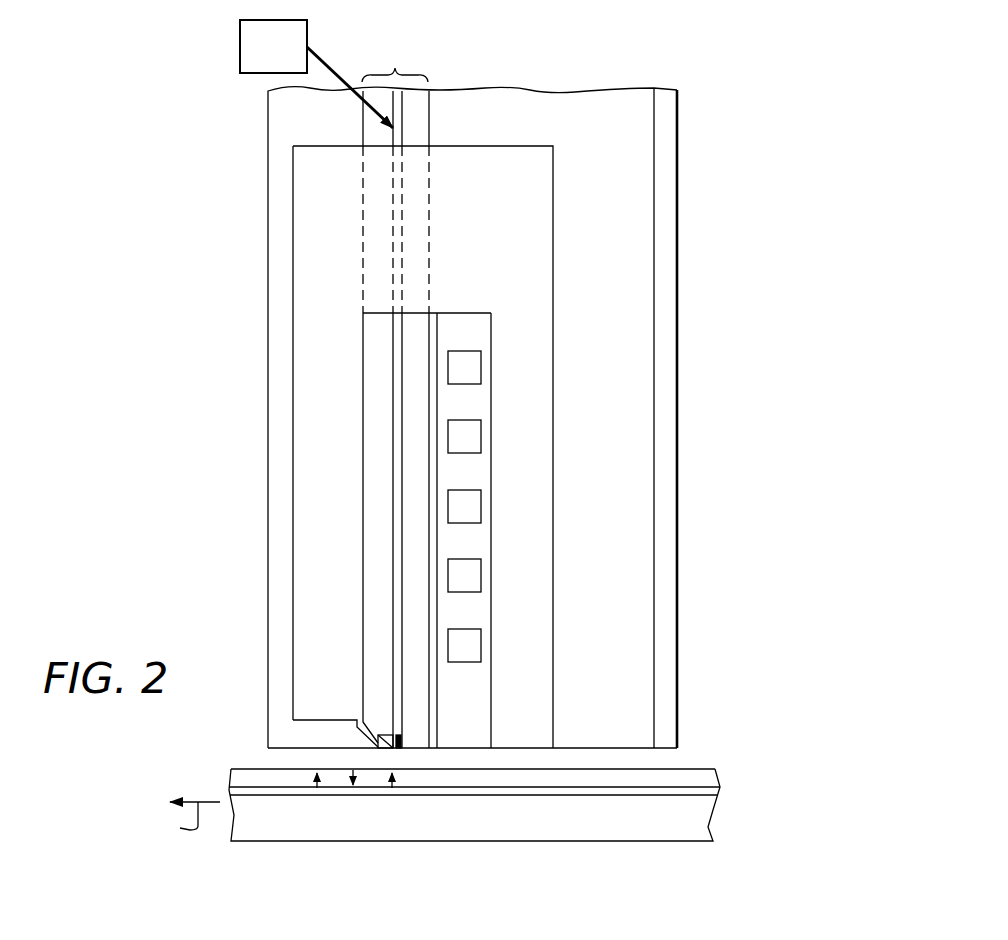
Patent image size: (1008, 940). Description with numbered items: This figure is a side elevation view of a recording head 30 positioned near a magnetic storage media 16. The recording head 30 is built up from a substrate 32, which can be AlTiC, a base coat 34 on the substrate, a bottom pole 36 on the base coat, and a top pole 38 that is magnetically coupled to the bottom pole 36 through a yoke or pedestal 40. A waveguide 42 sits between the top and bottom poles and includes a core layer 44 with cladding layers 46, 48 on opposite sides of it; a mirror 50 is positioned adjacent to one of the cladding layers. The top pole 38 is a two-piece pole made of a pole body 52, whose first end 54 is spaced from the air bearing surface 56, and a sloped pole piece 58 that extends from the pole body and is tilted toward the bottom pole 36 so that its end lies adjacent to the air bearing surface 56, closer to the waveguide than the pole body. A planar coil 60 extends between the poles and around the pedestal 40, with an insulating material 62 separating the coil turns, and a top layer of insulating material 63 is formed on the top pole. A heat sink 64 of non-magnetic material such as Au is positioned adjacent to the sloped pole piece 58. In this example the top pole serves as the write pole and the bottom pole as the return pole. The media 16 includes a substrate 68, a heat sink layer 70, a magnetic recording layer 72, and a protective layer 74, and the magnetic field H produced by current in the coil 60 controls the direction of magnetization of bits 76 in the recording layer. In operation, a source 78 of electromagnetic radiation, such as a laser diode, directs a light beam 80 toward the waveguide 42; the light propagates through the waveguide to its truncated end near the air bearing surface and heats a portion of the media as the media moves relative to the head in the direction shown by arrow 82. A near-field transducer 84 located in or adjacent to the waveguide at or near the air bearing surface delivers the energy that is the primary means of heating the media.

The storage media 16 is at (718, 756).
The recording head 30 is at (221, 160).
The substrate 32 is at (665, 103).
The base coat 34 is at (607, 110).
The bottom pole 36 is at (545, 468).
The top pole 38 is at (303, 510).
The pedestal 40 is at (485, 158).
The waveguide 42 is at (395, 57).
The core layer 44 is at (400, 394).
The cladding layer 46 is at (410, 348).
The cladding layer 48 is at (375, 451).
The mirror 50 is at (432, 318).
The pole body 52 is at (303, 619).
The first end 54 is at (308, 723).
The air bearing surface 56 is at (470, 750).
The sloped pole piece 58 is at (378, 736).
The planar coil 60 is at (481, 509).
The insulating material 62 is at (485, 707).
The top layer of insulating material 63 is at (281, 237).
The heat sink 64 is at (390, 734).
The substrate 68 is at (660, 823).
The heat sink layer 70 is at (713, 792).
The magnetic recording layer 72 is at (703, 780).
The protective layer 74 is at (697, 768).
The bits 76 is at (316, 784).
The source of electromagnetic radiation 78 is at (240, 47).
The light beam 80 is at (336, 72).
The arrow 82 is at (183, 826).
The near-field transducer 84 is at (403, 742).